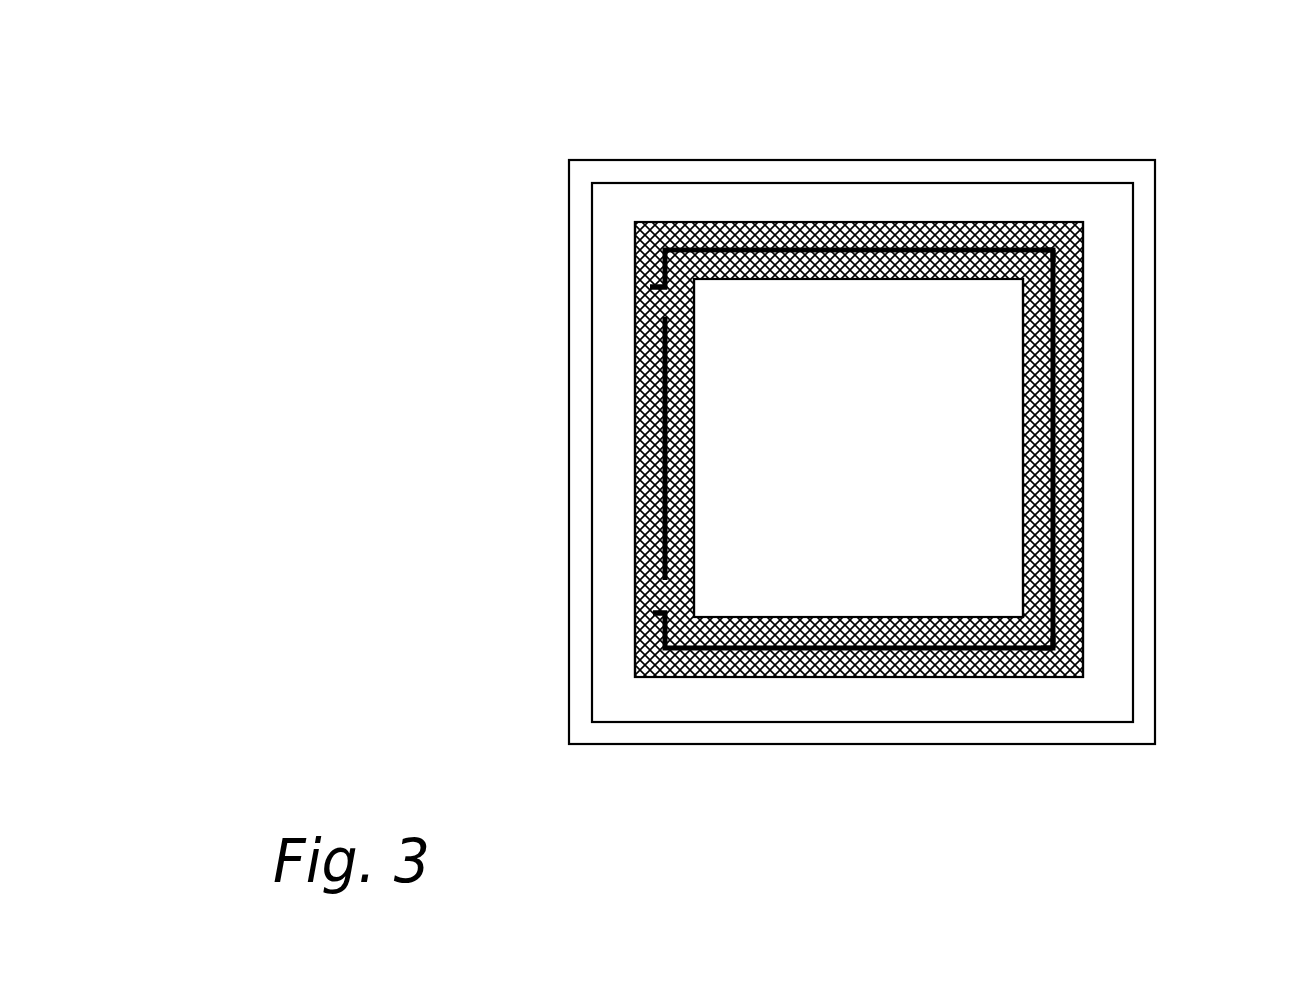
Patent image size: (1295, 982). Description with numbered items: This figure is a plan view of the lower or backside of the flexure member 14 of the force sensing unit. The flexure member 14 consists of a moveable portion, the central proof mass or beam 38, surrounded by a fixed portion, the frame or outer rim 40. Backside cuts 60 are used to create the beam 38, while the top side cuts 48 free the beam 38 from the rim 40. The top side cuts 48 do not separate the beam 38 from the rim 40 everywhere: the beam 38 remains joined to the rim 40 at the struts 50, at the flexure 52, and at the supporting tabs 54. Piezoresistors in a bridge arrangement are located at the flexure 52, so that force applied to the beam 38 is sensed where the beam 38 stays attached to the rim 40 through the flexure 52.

The flexure member 14 is at (978, 128).
The beam 38 is at (866, 462).
The rim 40 is at (1068, 711).
The top side cuts 48 is at (1062, 375).
The struts 50 is at (635, 287).
The flexure 52 is at (658, 437).
The support tabs 54 is at (1052, 257).
The backside cuts 60 is at (1083, 452).